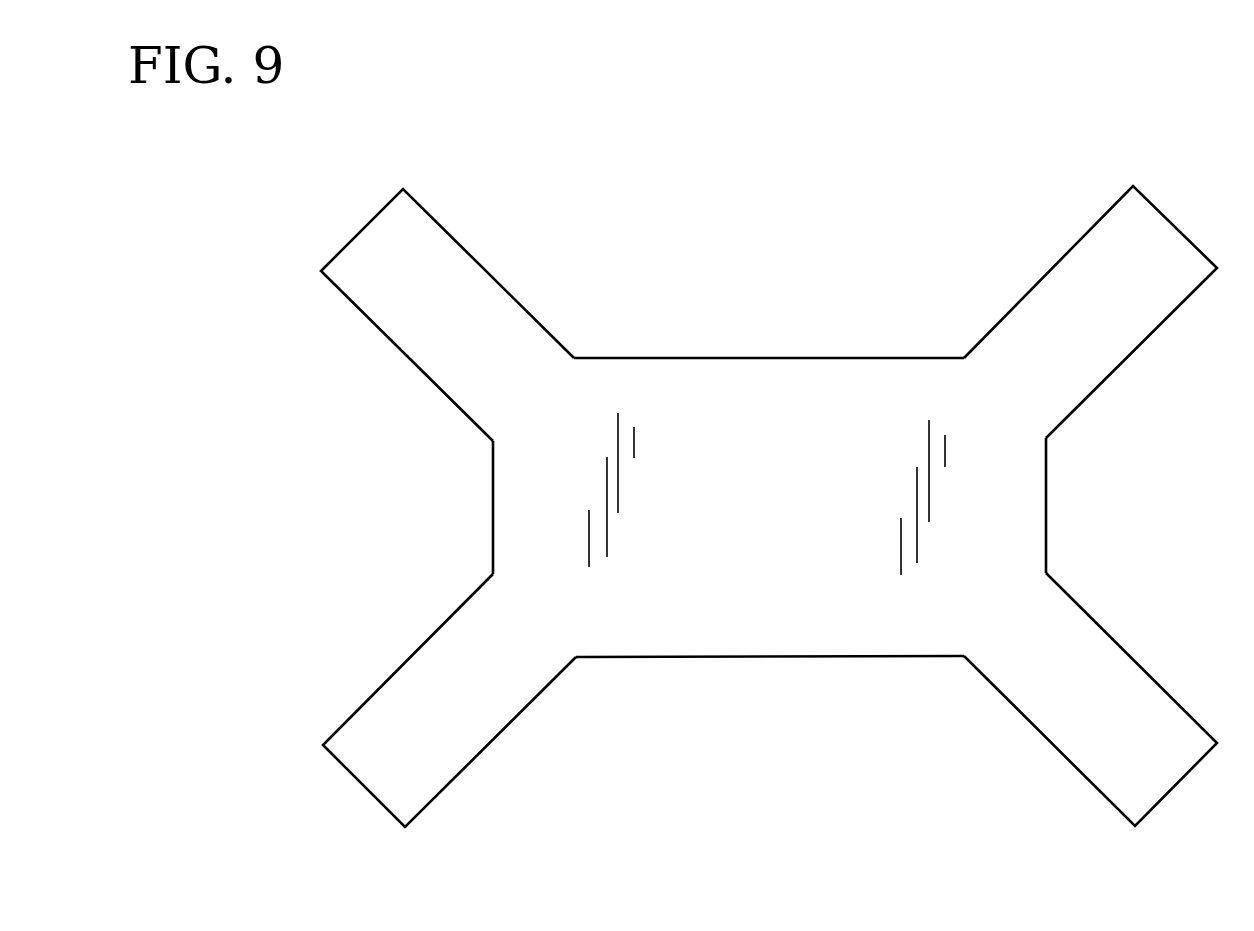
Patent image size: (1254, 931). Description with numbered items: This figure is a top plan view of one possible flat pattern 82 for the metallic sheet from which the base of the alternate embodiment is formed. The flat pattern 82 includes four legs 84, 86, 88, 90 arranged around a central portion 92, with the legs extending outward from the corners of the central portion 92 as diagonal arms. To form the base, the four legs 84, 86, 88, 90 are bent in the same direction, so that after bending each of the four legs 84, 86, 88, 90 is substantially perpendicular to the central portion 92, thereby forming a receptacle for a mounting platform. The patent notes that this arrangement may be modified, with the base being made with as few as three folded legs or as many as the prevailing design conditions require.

The flat pattern 82 is at (718, 357).
The leg 84 is at (452, 235).
The leg 86 is at (1033, 283).
The leg 88 is at (1127, 652).
The leg 90 is at (483, 750).
The central portion 92 is at (830, 655).